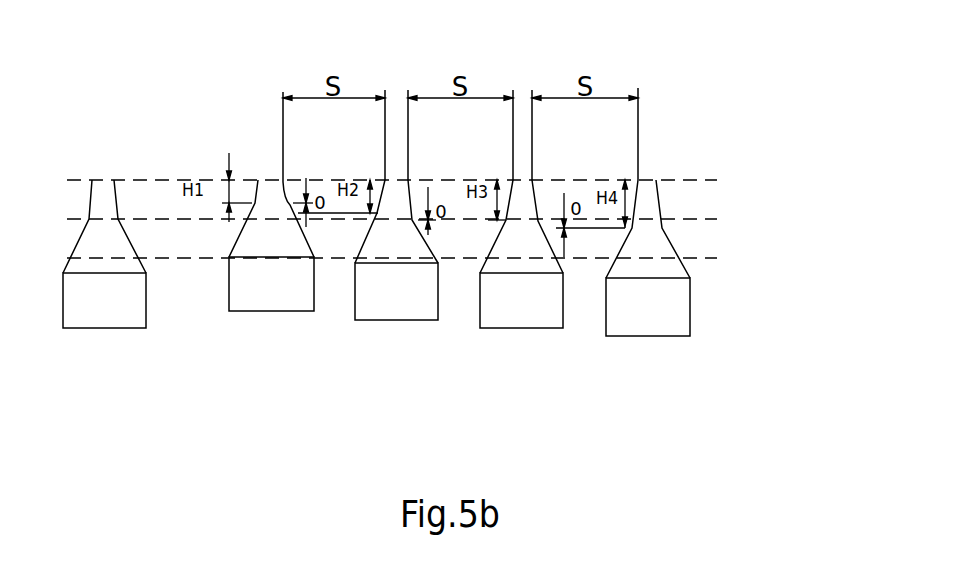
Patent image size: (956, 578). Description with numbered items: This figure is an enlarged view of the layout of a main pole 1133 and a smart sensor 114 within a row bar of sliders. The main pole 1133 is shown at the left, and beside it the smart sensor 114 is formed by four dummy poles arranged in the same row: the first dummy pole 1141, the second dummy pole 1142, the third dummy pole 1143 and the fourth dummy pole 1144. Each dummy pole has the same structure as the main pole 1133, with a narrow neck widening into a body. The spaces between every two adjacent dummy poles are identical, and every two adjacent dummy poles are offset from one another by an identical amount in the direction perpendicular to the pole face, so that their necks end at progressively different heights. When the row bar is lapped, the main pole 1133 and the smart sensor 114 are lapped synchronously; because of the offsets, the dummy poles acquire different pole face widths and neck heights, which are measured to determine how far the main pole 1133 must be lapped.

The smart sensor 114 is at (727, 240).
The main pole 1133 is at (104, 245).
The first dummy pole 1141 is at (270, 290).
The second dummy pole 1142 is at (395, 292).
The third dummy pole 1143 is at (537, 292).
The fourth dummy pole 1144 is at (637, 292).